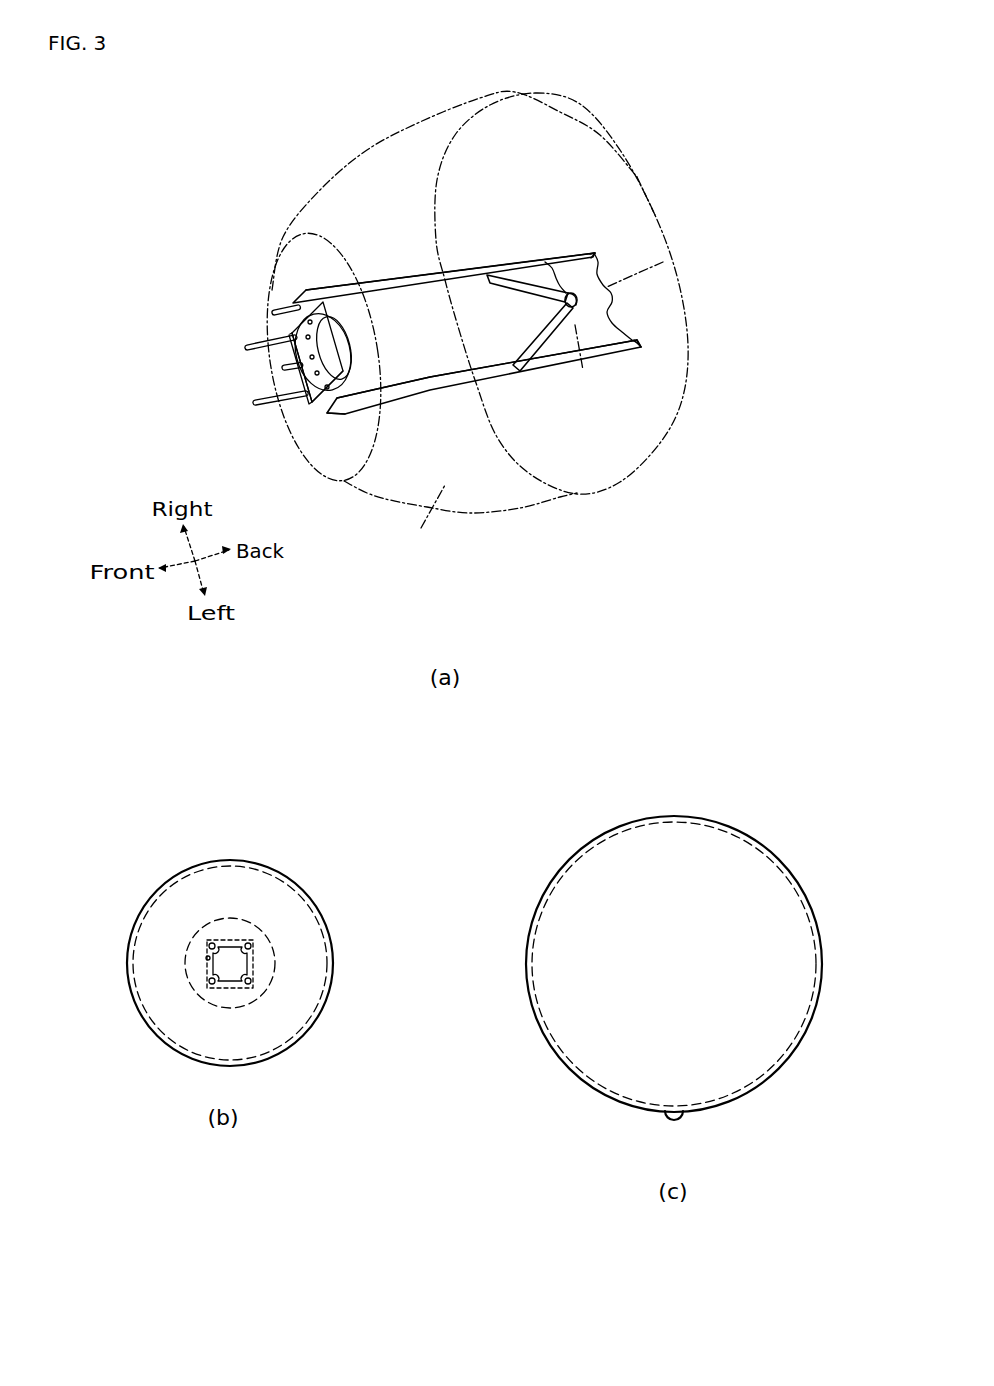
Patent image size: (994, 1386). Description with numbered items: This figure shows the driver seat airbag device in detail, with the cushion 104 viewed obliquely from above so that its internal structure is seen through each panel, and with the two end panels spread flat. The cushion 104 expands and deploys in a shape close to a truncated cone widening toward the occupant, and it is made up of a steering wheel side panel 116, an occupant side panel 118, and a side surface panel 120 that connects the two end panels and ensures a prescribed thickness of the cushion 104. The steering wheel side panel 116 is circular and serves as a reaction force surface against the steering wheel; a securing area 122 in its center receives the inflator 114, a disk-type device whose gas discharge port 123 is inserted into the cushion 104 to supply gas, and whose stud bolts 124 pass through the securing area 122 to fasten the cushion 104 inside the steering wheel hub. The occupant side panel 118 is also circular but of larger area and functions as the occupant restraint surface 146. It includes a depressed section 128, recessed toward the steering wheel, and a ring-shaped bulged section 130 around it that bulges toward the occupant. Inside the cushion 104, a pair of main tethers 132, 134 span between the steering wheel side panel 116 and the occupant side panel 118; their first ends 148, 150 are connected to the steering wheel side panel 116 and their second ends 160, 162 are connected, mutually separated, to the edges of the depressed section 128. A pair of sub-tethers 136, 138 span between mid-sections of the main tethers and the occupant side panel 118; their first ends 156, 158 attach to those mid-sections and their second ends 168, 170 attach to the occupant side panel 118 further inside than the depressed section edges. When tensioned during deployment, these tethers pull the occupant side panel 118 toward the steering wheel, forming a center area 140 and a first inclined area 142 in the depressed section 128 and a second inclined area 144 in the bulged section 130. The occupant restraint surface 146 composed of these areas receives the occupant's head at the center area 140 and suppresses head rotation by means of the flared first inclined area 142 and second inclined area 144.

The cushion 104 is at (423, 131).
The inflator 114 is at (271, 313).
The steering wheel side panel 116 is at (317, 440).
The occupant side panel 118 is at (652, 437).
The side surface panel 120 is at (423, 520).
The securing area 122 is at (253, 956).
The gas discharge port 123 is at (303, 394).
The stud bolts 124 is at (246, 352).
The depressed section 128 is at (615, 283).
The bulged section 130 is at (639, 212).
The main tether 132 is at (405, 279).
The main tether 134 is at (437, 389).
The sub-tether 136 is at (538, 285).
The sub-tether 138 is at (557, 361).
The center area 140 is at (560, 305).
The first inclined area 142 is at (663, 262).
The second inclined area 144 is at (670, 296).
The occupant restraint surface 146 is at (663, 352).
The first end of main tether 148 is at (302, 295).
The first end of main tether 150 is at (342, 416).
The first end of sub-tether 156 is at (492, 279).
The first end of sub-tether 158 is at (516, 365).
The second end of main tether 160 is at (594, 253).
The second end of main tether 162 is at (631, 350).
The second end of sub-tether 168 is at (553, 270).
The second end of sub-tether 170 is at (574, 307).